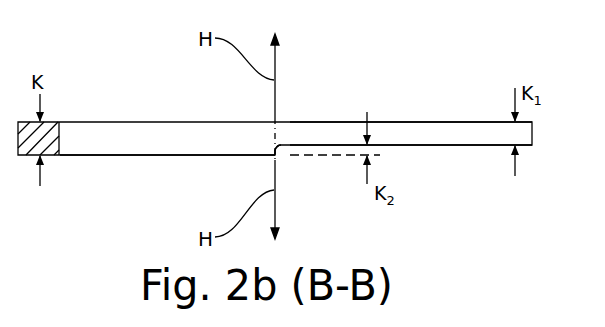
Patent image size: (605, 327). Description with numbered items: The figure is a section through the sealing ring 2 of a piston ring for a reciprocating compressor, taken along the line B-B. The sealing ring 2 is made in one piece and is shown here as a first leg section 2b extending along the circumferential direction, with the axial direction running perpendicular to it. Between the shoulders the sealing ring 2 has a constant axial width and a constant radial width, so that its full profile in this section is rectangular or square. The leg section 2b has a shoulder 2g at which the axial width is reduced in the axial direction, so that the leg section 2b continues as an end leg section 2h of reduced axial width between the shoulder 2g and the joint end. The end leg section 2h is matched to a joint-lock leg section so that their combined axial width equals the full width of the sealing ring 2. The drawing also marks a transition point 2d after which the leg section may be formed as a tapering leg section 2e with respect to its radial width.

The sealing ring 2 is at (386, 72).
The first leg section 2b is at (147, 150).
The transition point 2d is at (277, 134).
The tapering leg section 2e is at (420, 133).
The shoulder 2g is at (278, 152).
The end leg section 2h is at (402, 131).